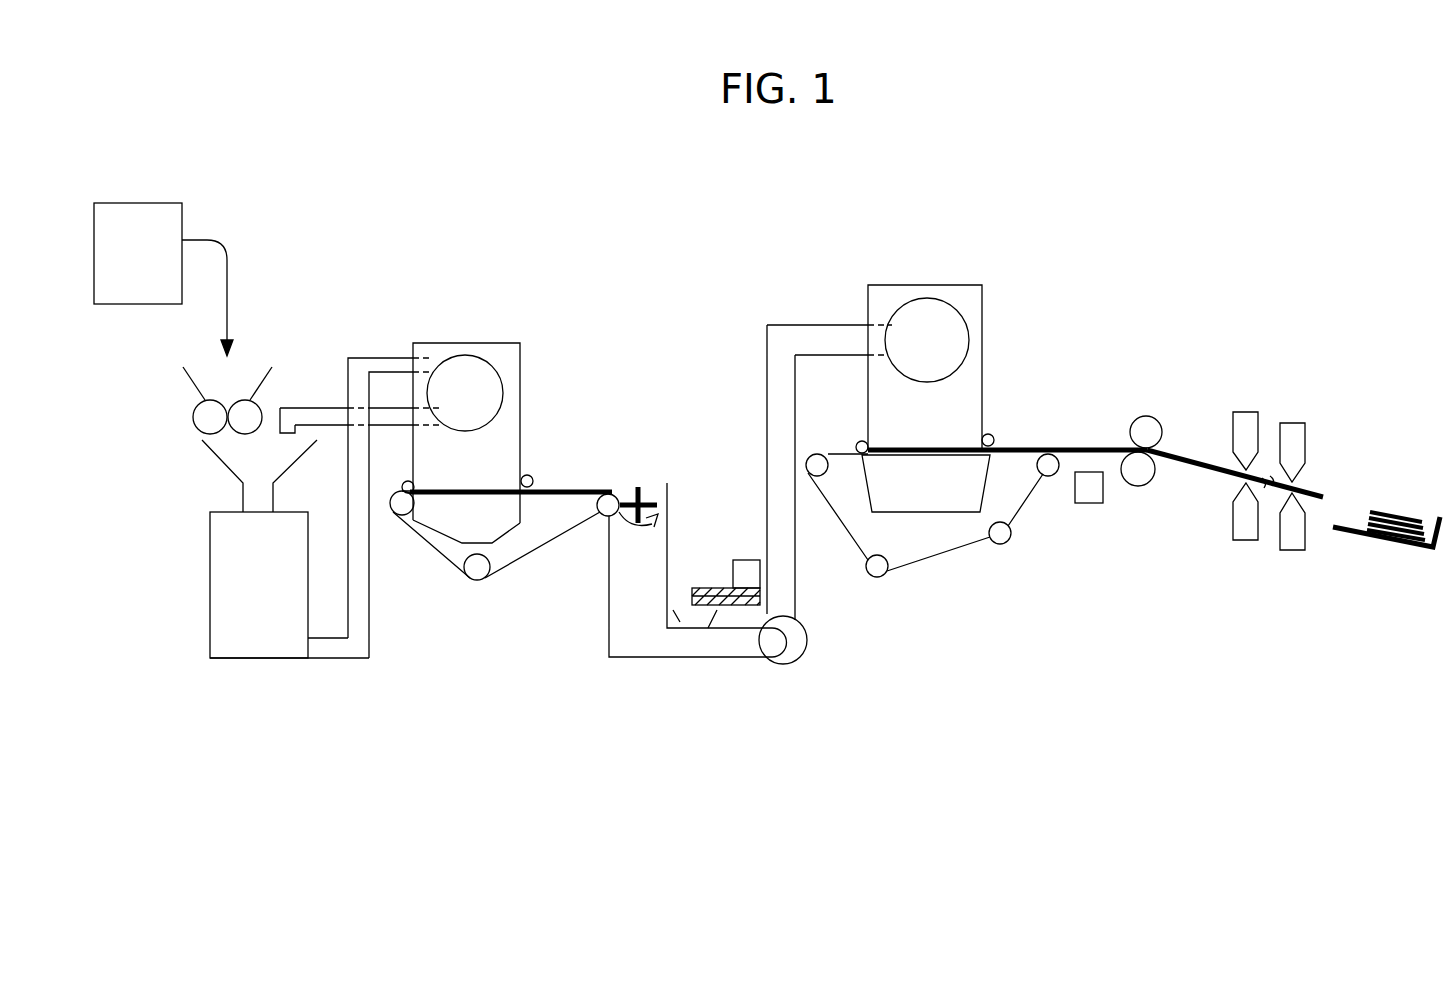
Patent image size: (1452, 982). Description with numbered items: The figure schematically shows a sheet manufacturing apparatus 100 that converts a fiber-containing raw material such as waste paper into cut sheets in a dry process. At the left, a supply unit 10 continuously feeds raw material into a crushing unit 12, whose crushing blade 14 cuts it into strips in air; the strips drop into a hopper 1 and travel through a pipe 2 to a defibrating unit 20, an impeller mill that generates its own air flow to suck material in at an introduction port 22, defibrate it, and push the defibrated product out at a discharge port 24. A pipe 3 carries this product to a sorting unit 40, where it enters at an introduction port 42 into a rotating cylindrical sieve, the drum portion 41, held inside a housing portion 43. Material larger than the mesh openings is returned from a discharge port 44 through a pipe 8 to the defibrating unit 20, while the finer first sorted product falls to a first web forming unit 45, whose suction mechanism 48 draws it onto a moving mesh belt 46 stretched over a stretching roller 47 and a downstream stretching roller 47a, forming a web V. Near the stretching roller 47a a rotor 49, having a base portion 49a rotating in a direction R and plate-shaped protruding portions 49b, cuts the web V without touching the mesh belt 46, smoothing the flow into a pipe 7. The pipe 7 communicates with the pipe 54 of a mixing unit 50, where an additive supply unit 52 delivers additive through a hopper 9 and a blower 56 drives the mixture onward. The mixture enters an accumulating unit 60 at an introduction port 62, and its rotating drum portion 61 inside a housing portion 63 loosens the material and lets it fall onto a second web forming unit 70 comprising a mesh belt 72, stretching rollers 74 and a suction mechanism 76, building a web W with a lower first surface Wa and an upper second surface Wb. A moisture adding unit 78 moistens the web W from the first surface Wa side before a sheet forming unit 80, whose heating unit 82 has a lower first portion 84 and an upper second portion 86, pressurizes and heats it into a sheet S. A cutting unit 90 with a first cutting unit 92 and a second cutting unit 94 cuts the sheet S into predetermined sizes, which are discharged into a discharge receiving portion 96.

The sheet manufacturing apparatus 100 is at (1103, 210).
The supply unit 10 is at (188, 198).
The crushing unit 12 is at (190, 387).
The crushing blade 14 is at (210, 417).
The hopper 1 is at (212, 458).
The pipe 2 is at (240, 497).
The pipe 3 is at (356, 502).
The pipe 8 is at (329, 412).
The pipe 7 is at (652, 576).
The hopper 9 is at (667, 620).
The defibrating unit 20 is at (232, 580).
The introduction port 22 is at (258, 518).
The discharge port 24 is at (300, 642).
The sorting unit 40 is at (494, 414).
The drum portion 41 is at (504, 393).
The introduction port 42 is at (443, 372).
The housing portion 43 is at (520, 370).
The discharge port 44 is at (438, 405).
The first web forming unit 45 is at (498, 568).
The mesh belt 46 is at (522, 572).
The stretching roller 47 is at (402, 504).
The stretching roller 47a is at (607, 511).
The suction mechanism 48 is at (458, 530).
The rotor 49 is at (654, 459).
The base portion 49a is at (645, 504).
The protruding portion 49b is at (629, 480).
The web V is at (548, 488).
The direction R is at (660, 532).
The mixing unit 50 is at (779, 524).
The additive supply unit 52 is at (748, 560).
The pipe 54 is at (780, 473).
The blower 56 is at (797, 654).
The accumulating unit 60 is at (972, 340).
The drum portion 61 is at (970, 340).
The introduction port 62 is at (895, 336).
The housing portion 63 is at (983, 308).
The second web forming unit 70 is at (976, 520).
The mesh belt 72 is at (857, 449).
The stretching roller 74 is at (814, 474).
The suction mechanism 76 is at (918, 490).
The moisture adding unit 78 is at (1092, 484).
The second surface Wb is at (1080, 447).
The web W is at (1100, 447).
The first surface Wa is at (1108, 456).
The sheet forming unit 80 is at (1170, 429).
The heating unit 82 is at (1170, 450).
The first portion 84 is at (1142, 470).
The second portion 86 is at (1146, 432).
The cutting unit 90 is at (1293, 438).
The first cutting unit 92 is at (1245, 400).
The second cutting unit 94 is at (1290, 410).
The discharge receiving portion 96 is at (1415, 548).
The sheet S is at (1208, 465).